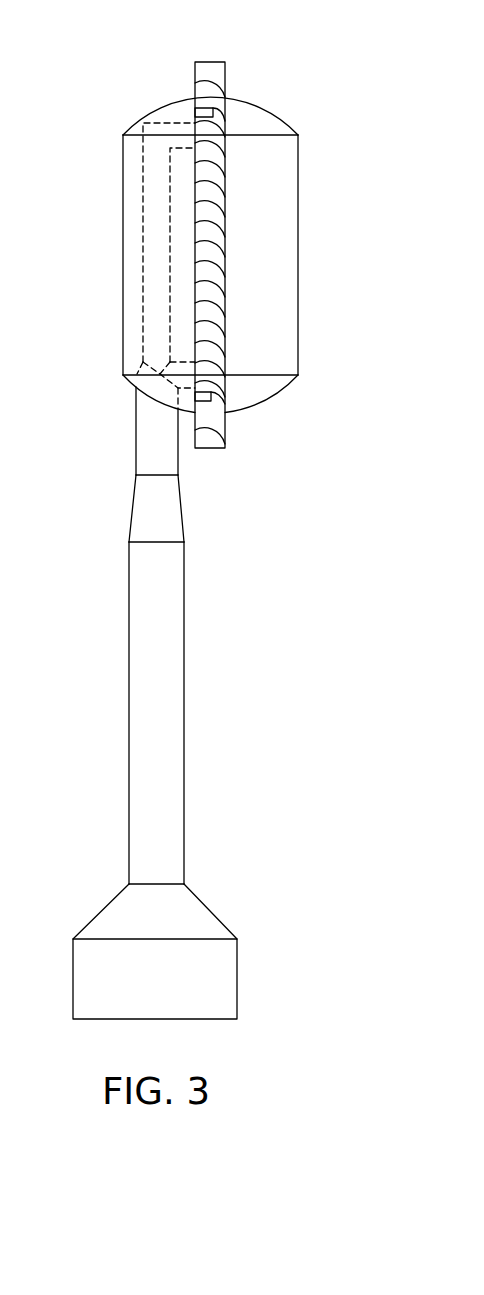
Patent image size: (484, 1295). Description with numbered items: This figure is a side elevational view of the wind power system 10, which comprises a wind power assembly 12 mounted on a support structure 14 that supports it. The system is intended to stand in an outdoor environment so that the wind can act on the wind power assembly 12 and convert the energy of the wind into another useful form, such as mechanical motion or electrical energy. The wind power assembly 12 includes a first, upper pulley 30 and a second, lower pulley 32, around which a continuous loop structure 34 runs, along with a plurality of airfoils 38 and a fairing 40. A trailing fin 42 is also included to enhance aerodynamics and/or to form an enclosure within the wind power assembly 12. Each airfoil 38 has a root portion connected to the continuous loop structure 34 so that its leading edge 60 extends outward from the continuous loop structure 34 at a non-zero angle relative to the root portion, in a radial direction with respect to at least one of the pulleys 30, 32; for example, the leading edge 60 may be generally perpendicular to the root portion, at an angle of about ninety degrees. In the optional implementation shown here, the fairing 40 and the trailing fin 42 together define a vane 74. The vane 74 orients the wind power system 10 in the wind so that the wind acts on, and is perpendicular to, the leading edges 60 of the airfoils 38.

The wind power system 10 is at (228, 515).
The vane 74 is at (176, 257).
The wind power assembly 12 is at (122, 308).
The support structure 14 is at (129, 582).
The fairing 40 is at (123, 170).
The trailing fin 42 is at (268, 105).
The first, upper pulley 30 is at (221, 162).
The second, lower pulley 32 is at (221, 358).
The continuous loop structure 34 is at (226, 243).
The leading edge 60 is at (226, 270).
The airfoil 38 is at (212, 62).